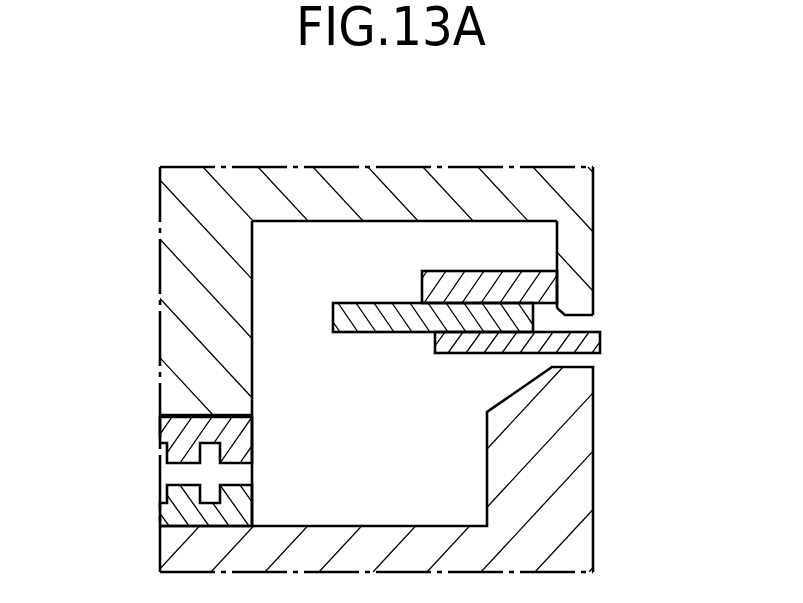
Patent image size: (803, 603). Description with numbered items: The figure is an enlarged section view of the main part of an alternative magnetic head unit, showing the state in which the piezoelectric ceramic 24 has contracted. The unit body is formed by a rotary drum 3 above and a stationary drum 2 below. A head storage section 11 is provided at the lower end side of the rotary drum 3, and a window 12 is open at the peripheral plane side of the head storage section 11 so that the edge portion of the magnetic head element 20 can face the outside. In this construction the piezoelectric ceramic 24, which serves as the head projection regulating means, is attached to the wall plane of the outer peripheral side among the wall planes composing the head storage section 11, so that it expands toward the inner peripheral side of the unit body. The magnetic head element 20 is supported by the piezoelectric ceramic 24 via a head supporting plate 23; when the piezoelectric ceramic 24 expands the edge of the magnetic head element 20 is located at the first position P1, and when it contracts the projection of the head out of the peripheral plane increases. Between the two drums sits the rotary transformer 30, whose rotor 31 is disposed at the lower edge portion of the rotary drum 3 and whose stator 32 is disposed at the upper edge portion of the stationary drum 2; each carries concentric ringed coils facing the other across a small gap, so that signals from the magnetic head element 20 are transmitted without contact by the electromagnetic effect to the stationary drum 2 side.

The stationary drum 2 is at (577, 515).
The rotary drum 3 is at (578, 194).
The head storage section 11 is at (446, 221).
The window 12 is at (572, 322).
The magnetic head element 20 is at (597, 347).
The head supporting plate 23 is at (345, 314).
The piezoelectric ceramic 24 is at (538, 290).
The rotary transformer 30 is at (80, 412).
The rotor 31 is at (173, 430).
The stator 32 is at (173, 498).
The first position P1 is at (535, 427).